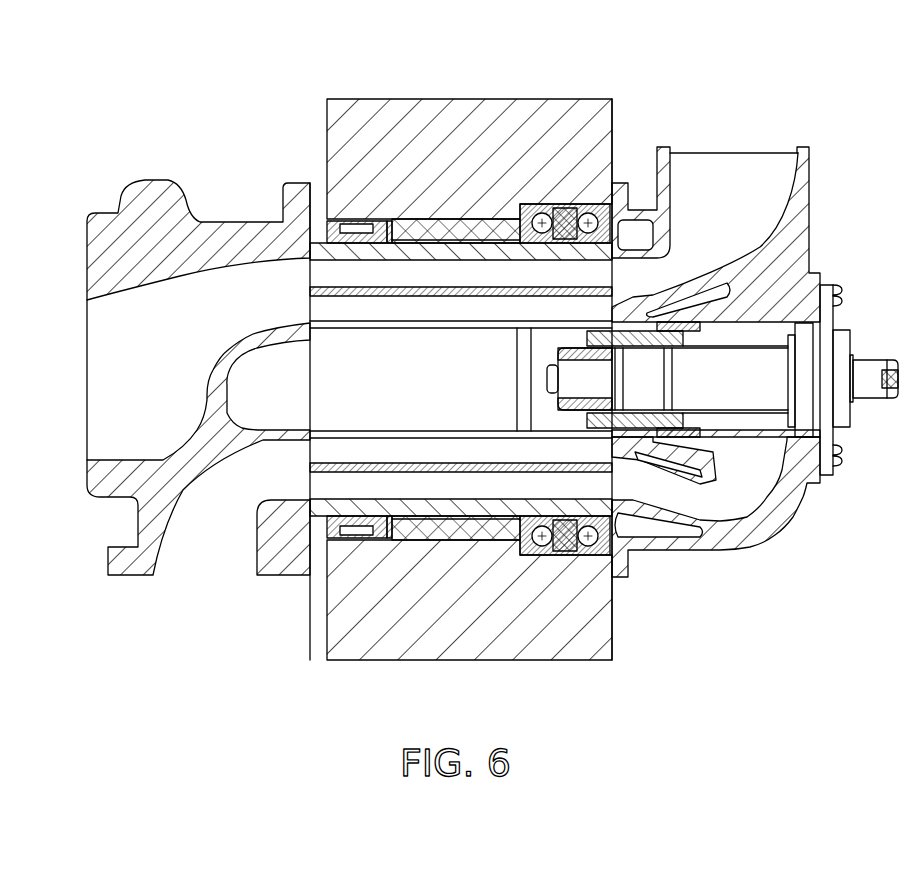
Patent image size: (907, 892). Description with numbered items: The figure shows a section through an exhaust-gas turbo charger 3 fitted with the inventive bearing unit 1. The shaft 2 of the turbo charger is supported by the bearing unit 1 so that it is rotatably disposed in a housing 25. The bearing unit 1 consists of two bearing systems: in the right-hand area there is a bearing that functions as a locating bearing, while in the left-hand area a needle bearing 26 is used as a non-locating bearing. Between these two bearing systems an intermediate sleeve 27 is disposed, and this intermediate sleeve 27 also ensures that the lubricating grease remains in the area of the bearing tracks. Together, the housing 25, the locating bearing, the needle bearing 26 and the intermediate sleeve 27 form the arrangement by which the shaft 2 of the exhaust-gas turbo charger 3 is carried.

The bearing unit 1 is at (371, 190).
The shaft 2 is at (607, 204).
The exhaust-gas turbo charger 3 is at (186, 120).
The housing 25 is at (482, 135).
The needle bearing 26 is at (344, 221).
The intermediate sleeve 27 is at (478, 560).